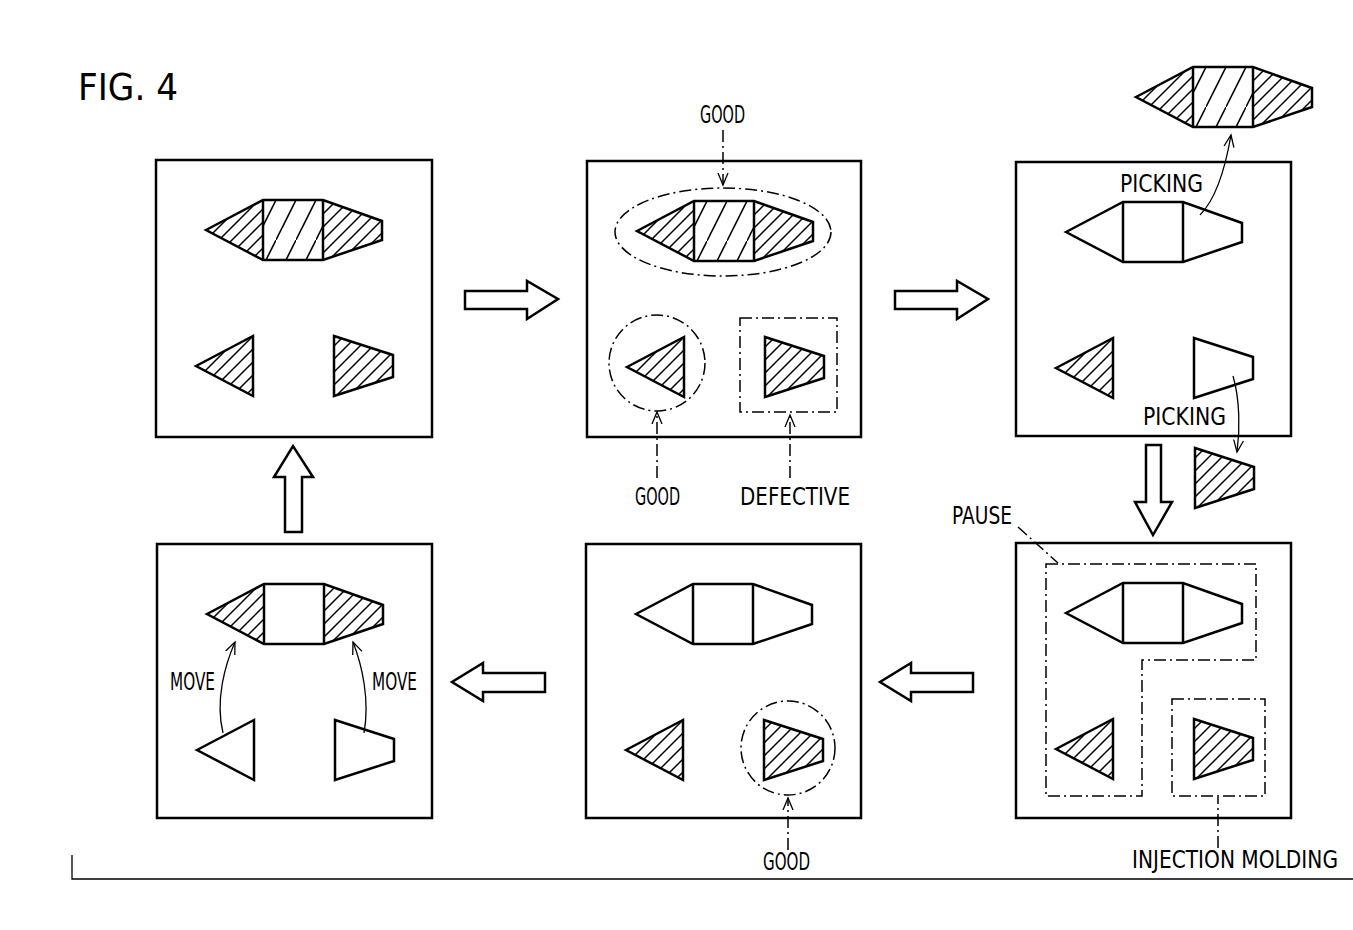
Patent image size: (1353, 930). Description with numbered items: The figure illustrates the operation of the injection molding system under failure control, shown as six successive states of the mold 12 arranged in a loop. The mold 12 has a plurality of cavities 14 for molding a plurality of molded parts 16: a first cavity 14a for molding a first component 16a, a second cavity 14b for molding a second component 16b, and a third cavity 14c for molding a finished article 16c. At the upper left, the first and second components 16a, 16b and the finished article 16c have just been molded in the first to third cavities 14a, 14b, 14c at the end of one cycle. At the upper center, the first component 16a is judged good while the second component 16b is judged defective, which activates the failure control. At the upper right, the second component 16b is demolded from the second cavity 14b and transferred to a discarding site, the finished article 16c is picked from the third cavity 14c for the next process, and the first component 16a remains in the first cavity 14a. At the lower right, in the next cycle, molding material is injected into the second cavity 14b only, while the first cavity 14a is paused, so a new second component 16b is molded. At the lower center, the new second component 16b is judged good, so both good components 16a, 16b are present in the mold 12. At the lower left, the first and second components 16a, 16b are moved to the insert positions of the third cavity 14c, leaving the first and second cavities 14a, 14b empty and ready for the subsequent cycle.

The mold 12 is at (150, 197).
The cavities 14 is at (719, 505).
The first cavity 14a is at (1085, 750).
The second cavity 14b is at (1308, 697).
The third cavity 14c is at (307, 261).
The molded parts 16 is at (719, 472).
The first component 16a is at (233, 376).
The second component 16b is at (357, 382).
The finished article 16c is at (298, 220).